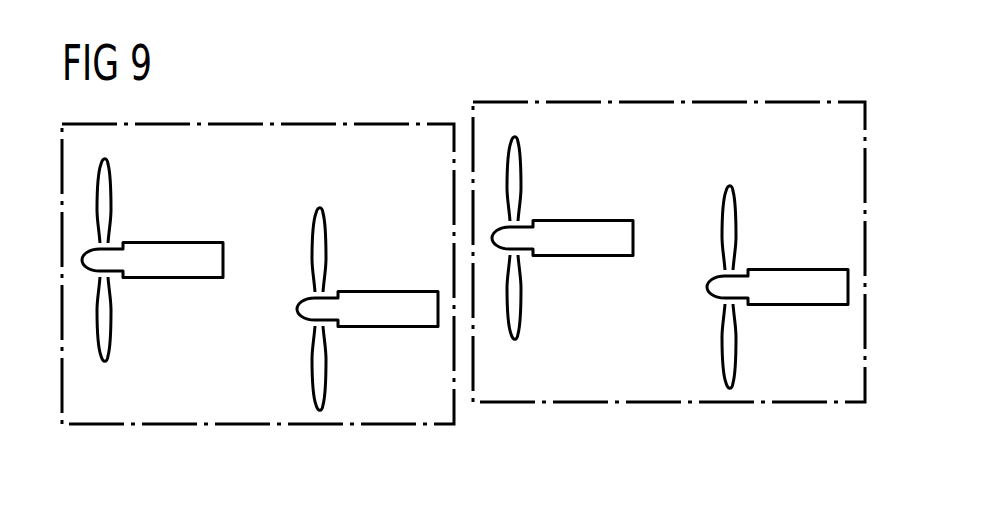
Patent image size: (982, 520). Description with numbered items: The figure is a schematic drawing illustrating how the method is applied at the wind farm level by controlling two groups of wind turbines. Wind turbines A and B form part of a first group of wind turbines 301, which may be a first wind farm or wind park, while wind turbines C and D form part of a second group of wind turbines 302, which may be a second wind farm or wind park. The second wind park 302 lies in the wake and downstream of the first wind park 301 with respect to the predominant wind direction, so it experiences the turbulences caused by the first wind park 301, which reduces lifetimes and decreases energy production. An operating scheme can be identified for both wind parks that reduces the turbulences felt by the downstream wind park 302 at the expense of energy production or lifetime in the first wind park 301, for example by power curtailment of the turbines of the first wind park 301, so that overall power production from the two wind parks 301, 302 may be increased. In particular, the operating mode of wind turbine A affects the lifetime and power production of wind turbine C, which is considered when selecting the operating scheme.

The first group of wind turbines 301 is at (261, 426).
The second group of wind turbines 302 is at (670, 404).
The wind turbine A is at (173, 280).
The wind turbine B is at (387, 328).
The wind turbine C is at (585, 258).
The wind turbine D is at (797, 307).